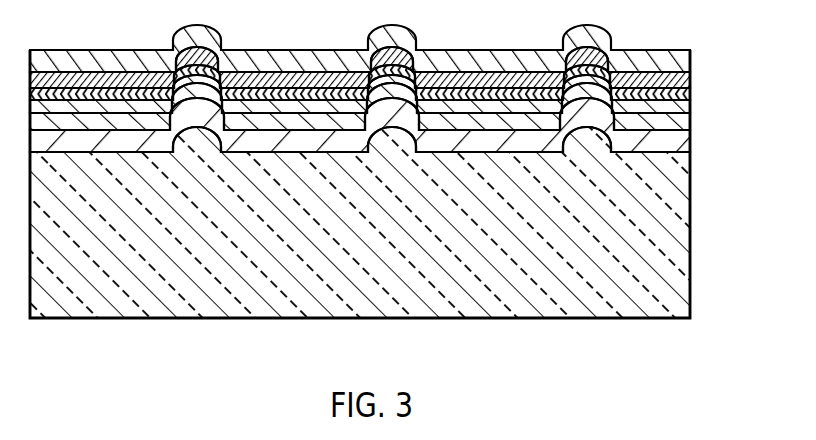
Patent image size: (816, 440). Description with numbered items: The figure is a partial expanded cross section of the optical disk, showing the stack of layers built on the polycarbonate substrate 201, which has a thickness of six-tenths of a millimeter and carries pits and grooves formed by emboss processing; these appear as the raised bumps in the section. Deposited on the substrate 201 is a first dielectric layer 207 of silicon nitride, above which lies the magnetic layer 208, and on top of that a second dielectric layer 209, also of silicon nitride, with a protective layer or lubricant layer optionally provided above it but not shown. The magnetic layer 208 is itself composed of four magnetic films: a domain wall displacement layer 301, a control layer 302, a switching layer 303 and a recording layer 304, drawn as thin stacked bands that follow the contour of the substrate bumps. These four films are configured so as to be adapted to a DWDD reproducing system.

The polycarbonate substrate 201 is at (684, 234).
The first dielectric layer 207 is at (689, 142).
The magnetic layer 208 is at (423, 98).
The second dielectric layer 209 is at (684, 49).
The domain wall displacement layer 301 is at (690, 118).
The control layer 302 is at (690, 100).
The switching layer 303 is at (690, 92).
The recording layer 304 is at (399, 67).